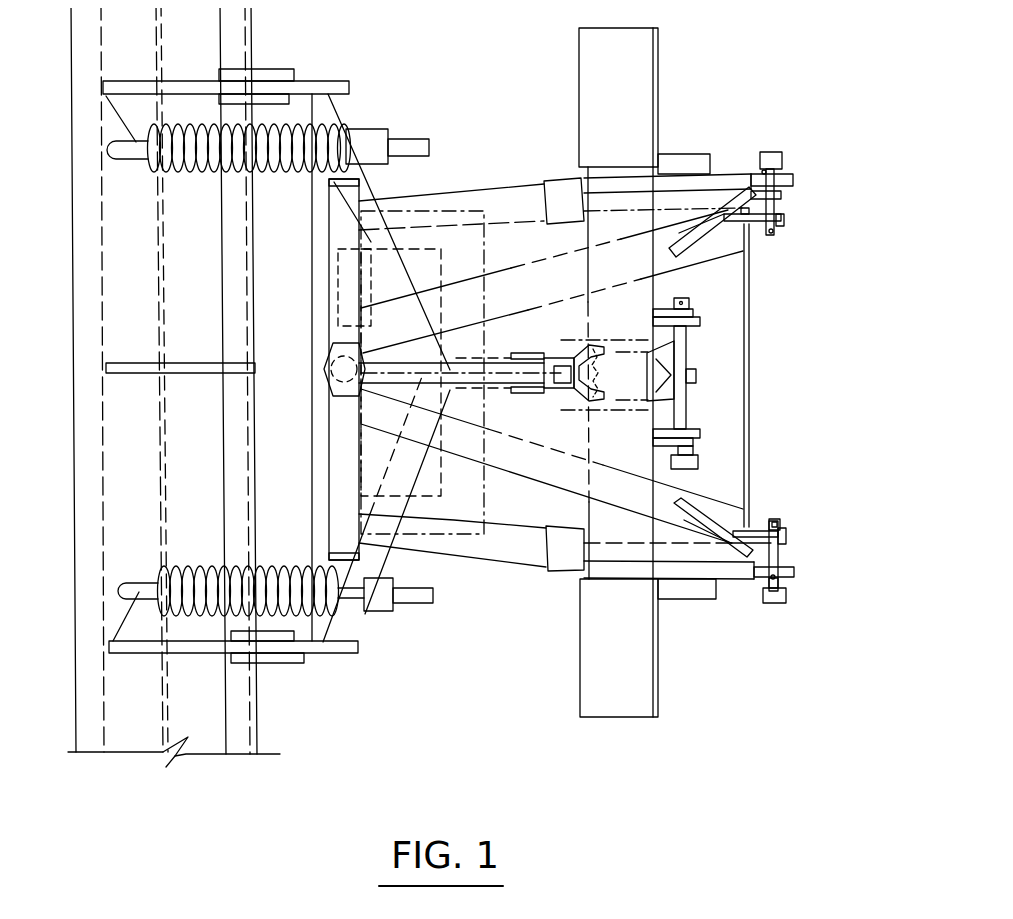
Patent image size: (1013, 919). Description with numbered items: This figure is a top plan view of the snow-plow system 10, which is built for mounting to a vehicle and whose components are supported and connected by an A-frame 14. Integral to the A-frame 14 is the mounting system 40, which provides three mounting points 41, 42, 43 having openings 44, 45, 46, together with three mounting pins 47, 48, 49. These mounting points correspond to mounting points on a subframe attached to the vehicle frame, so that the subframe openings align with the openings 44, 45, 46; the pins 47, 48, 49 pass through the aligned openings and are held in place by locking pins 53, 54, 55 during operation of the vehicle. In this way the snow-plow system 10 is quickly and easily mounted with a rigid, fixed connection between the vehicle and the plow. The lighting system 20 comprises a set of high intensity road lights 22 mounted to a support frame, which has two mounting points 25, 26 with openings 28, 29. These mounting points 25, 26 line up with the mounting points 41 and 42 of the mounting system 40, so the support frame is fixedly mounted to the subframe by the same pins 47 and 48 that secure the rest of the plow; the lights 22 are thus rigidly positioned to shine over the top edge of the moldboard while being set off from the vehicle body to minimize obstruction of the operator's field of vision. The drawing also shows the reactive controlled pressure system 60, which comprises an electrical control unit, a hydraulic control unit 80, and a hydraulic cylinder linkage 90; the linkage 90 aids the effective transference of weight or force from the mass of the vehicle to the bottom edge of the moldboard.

The snow-plow system 10 is at (278, 676).
The A-frame 14 is at (565, 486).
The lighting system 20 is at (655, 109).
The high intensity road lights 22 is at (631, 56).
The mounting point 25 is at (761, 170).
The mounting point 26 is at (793, 567).
The opening 28 is at (768, 574).
The opening 29 is at (790, 176).
The mounting system 40 is at (745, 645).
The mounting point 41 is at (791, 214).
The mounting point 42 is at (790, 524).
The mounting point 43 is at (693, 374).
The opening 44 is at (776, 226).
The opening 45 is at (785, 537).
The opening 46 is at (686, 362).
The mounting pin 47 is at (771, 153).
The mounting pin 48 is at (785, 589).
The mounting pin 49 is at (691, 450).
The locking pin 53 is at (765, 234).
The locking pin 54 is at (774, 515).
The locking pin 55 is at (686, 300).
The reactive controlled pressure system 60 is at (556, 363).
The hydraulic control unit 80 is at (421, 249).
The hydraulic cylinder linkage 90 is at (570, 404).